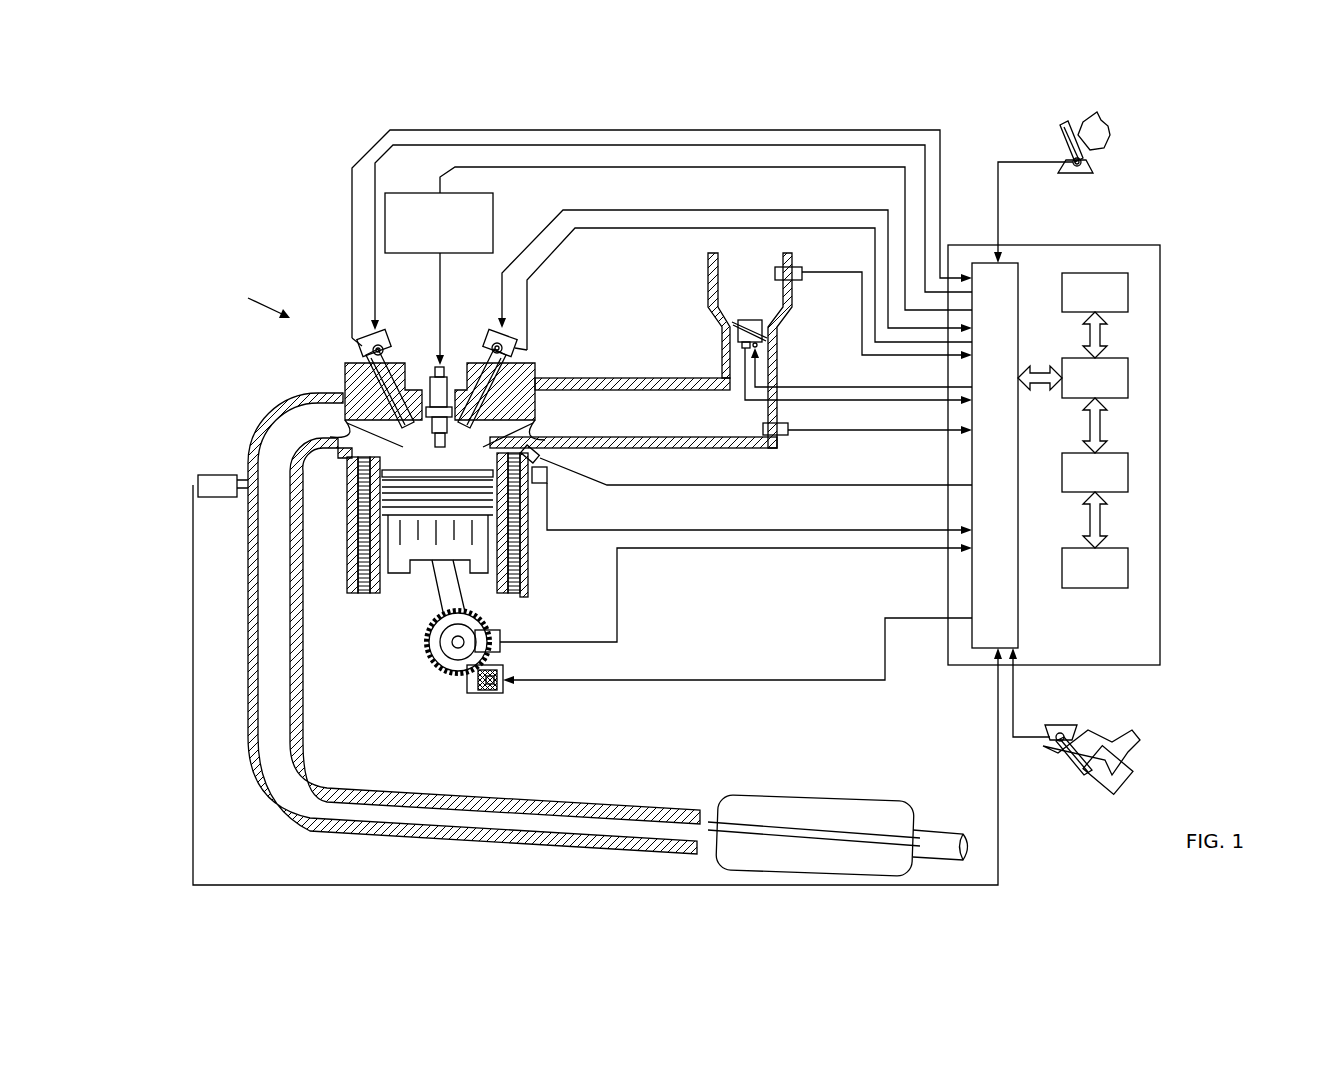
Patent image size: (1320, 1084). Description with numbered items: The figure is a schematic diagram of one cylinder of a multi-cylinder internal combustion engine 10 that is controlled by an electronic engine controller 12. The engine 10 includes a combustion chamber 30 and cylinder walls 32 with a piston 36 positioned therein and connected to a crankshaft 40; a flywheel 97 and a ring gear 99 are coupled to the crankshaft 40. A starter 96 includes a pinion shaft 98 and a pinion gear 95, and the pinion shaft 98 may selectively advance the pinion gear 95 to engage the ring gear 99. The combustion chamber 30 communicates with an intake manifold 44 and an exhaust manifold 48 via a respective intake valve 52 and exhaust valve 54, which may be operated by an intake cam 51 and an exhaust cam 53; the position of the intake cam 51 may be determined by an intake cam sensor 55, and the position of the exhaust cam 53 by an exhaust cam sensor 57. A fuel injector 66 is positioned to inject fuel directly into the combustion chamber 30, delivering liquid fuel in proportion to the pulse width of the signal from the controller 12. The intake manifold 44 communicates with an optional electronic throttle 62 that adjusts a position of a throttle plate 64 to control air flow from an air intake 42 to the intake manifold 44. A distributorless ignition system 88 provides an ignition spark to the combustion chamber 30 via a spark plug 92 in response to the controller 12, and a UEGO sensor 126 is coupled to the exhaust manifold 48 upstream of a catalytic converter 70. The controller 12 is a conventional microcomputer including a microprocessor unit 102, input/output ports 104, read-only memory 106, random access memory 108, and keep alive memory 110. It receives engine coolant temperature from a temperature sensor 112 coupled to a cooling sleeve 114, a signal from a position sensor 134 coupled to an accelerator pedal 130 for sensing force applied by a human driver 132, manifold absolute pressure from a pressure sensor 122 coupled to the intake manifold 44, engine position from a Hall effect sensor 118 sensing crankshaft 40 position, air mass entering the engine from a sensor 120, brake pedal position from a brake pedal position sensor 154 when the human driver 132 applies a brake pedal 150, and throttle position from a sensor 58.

The internal combustion engine 10 is at (254, 298).
The electronic engine controller 12 is at (1160, 250).
The combustion chamber 30 is at (438, 455).
The cylinder walls 32 is at (386, 585).
The piston 36 is at (423, 560).
The crankshaft 40 is at (440, 668).
The air intake 42 is at (750, 350).
The intake manifold 44 is at (689, 413).
The exhaust manifold 48 is at (474, 623).
The intake cam 51 is at (497, 328).
The intake valve 52 is at (497, 420).
The exhaust cam 53 is at (384, 330).
The exhaust valve 54 is at (364, 404).
The intake cam sensor 55 is at (516, 353).
The exhaust cam sensor 57 is at (362, 342).
The throttle position sensor 58 is at (740, 347).
The electronic throttle 62 is at (766, 334).
The throttle plate 64 is at (736, 330).
The fuel injector 66 is at (560, 470).
The catalytic converter 70 is at (735, 798).
The distributorless ignition system 88 is at (398, 193).
The spark plug 92 is at (443, 362).
The pinion gear 95 is at (495, 695).
The starter 96 is at (503, 690).
The flywheel 97 is at (430, 650).
The pinion shaft 98 is at (485, 693).
The ring gear 99 is at (448, 675).
The microprocessor unit 102 is at (1128, 380).
The input/output ports 104 is at (1018, 278).
The read-only memory 106 is at (1128, 290).
The random access memory 108 is at (1128, 472).
The keep alive memory 110 is at (1128, 568).
The temperature sensor 112 is at (548, 488).
The cooling sleeve 114 is at (516, 548).
The Hall effect sensor 118 is at (500, 632).
The air mass sensor 120 is at (795, 268).
The pressure sensor 122 is at (785, 437).
The UEGO sensor 126 is at (200, 477).
The accelerator pedal 130 is at (1058, 143).
The human driver 132 is at (1112, 130).
The position sensor 134 is at (1090, 162).
The brake pedal 150 is at (1085, 775).
The brake pedal position sensor 154 is at (1050, 730).